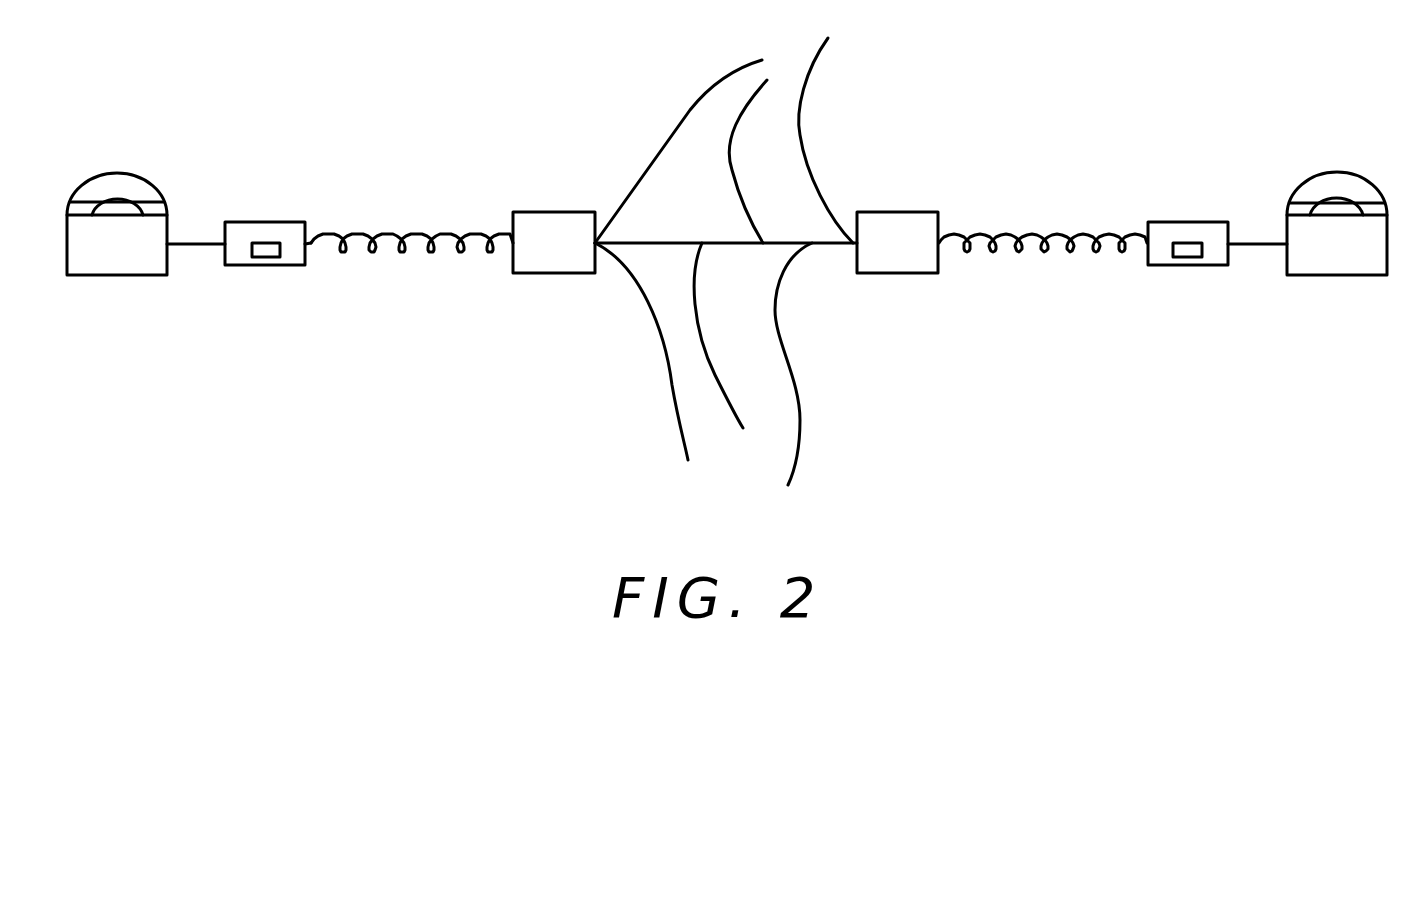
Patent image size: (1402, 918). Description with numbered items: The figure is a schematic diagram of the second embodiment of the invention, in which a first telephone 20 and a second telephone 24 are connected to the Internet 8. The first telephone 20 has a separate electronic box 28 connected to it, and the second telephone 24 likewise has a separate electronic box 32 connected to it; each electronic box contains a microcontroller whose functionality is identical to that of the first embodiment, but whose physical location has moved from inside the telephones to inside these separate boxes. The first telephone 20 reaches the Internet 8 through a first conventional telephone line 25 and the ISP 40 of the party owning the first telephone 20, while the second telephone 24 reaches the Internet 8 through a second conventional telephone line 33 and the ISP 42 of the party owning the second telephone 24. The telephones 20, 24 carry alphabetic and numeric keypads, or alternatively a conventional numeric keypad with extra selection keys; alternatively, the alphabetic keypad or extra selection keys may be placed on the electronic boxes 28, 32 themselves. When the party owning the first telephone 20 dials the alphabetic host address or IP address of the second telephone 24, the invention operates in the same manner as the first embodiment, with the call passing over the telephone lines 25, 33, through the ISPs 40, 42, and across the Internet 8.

The Internet 8 is at (683, 82).
The first telephone 20 is at (132, 276).
The second telephone 24 is at (1338, 276).
The first conventional telephone line 25 is at (445, 232).
The electronic box 28 is at (240, 248).
The electronic box 32 is at (1183, 250).
The second conventional telephone line 33 is at (1008, 230).
The ISP 40 is at (535, 274).
The ISP 42 is at (895, 274).